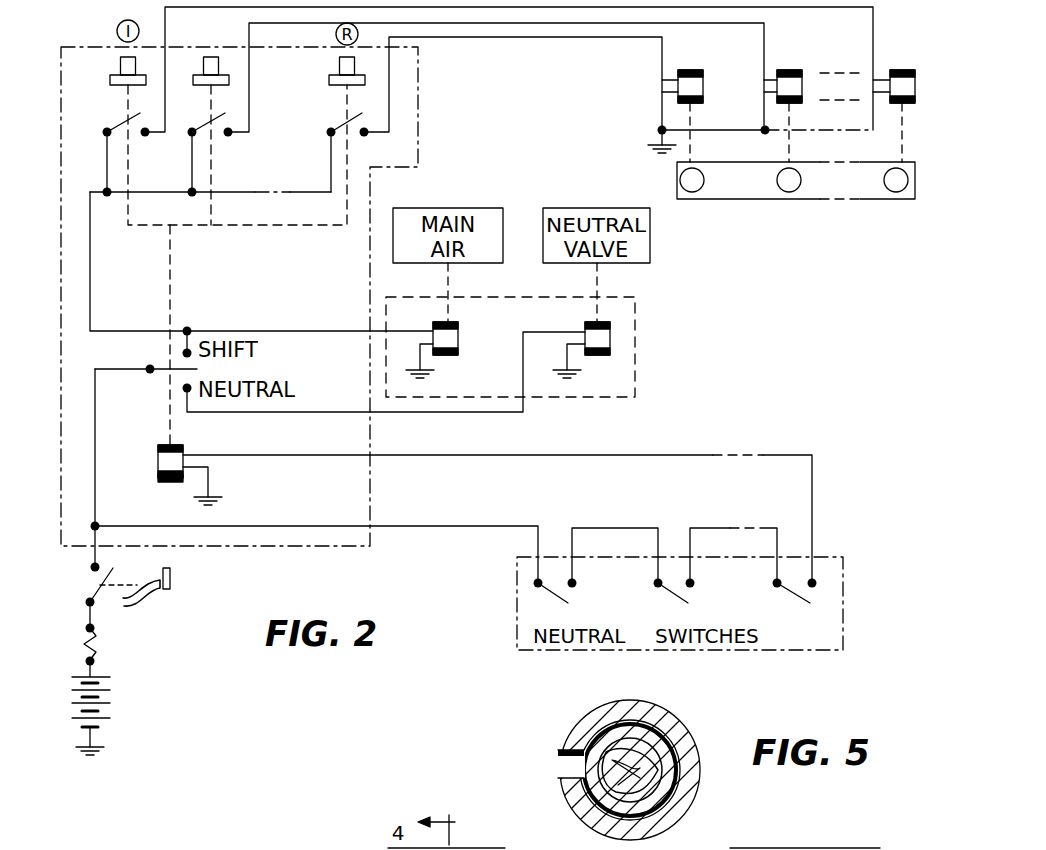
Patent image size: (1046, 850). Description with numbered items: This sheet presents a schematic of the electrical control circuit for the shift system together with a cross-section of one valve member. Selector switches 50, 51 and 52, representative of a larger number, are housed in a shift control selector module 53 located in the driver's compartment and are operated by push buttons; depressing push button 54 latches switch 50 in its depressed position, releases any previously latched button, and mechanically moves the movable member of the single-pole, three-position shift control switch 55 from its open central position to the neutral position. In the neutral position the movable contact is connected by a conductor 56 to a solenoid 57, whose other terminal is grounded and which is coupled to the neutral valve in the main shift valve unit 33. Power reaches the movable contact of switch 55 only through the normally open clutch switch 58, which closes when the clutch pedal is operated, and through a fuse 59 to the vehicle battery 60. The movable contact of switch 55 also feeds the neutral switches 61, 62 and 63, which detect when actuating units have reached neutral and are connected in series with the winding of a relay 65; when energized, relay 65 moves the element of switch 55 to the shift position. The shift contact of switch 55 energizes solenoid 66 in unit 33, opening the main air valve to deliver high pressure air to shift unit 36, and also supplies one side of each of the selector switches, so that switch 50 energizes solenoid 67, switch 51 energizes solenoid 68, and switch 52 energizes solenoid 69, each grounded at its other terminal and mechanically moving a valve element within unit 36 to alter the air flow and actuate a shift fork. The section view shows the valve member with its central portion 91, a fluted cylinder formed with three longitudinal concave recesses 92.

In FIG. 2, the main shift valve unit 33 is at (636, 372).
In FIG. 2, the shift valve unit 36 is at (917, 186).
In FIG. 2, the selector switch 50 is at (124, 110).
In FIG. 2, the selector switch 51 is at (200, 118).
In FIG. 2, the selector switch 52 is at (344, 110).
In FIG. 2, the shift control selector module 53 is at (418, 133).
In FIG. 2, the push button 54 is at (110, 75).
In FIG. 2, the shift control switch 55 is at (165, 352).
In FIG. 2, the conductor 56 is at (398, 413).
In FIG. 2, the solenoid 57 is at (611, 341).
In FIG. 2, the clutch switch 58 is at (86, 585).
In FIG. 2, the fuse 59 is at (85, 652).
In FIG. 2, the vehicle battery 60 is at (110, 676).
In FIG. 2, the neutral switch 61 is at (562, 600).
In FIG. 2, the neutral switch 62 is at (672, 600).
In FIG. 2, the neutral switch 63 is at (796, 600).
In FIG. 2, the relay 65 is at (157, 470).
In FIG. 2, the solenoid 66 is at (460, 340).
In FIG. 2, the solenoid 67 is at (915, 80).
In FIG. 2, the solenoid 68 is at (803, 80).
In FIG. 2, the solenoid 69 is at (704, 86).
In FIG. 5, the central portion 91 is at (690, 745).
In FIG. 5, the longitudinal concave recesses 92 is at (600, 782).